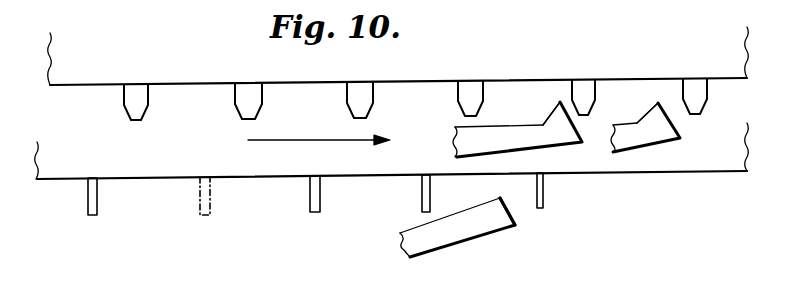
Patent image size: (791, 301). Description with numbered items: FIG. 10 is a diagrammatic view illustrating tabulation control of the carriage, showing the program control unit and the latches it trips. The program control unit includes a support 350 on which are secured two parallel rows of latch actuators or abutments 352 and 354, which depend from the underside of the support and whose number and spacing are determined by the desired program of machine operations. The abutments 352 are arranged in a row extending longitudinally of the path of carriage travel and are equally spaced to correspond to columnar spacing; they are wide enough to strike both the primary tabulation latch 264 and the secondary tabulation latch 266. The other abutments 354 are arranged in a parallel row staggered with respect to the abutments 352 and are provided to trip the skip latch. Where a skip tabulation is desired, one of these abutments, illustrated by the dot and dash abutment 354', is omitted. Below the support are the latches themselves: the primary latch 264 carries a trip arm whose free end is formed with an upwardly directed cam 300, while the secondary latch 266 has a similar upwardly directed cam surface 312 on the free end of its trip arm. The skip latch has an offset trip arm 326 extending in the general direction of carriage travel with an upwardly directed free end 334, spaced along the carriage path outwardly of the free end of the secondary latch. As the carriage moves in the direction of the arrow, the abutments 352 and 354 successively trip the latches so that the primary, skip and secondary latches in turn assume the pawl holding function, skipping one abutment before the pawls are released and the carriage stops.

The upwardly directed cam 300 is at (655, 105).
The upwardly directed cam surface 312 is at (594, 102).
The primary tabulation latch 264 is at (645, 140).
The secondary tabulation latch 266 is at (497, 143).
The offset trip arm 326 is at (450, 232).
The upwardly directed free end 334 is at (505, 208).
The support 350 is at (187, 84).
The abutments 352 is at (355, 97).
The abutments 354 is at (350, 211).
The omitted abutment 354' is at (233, 208).